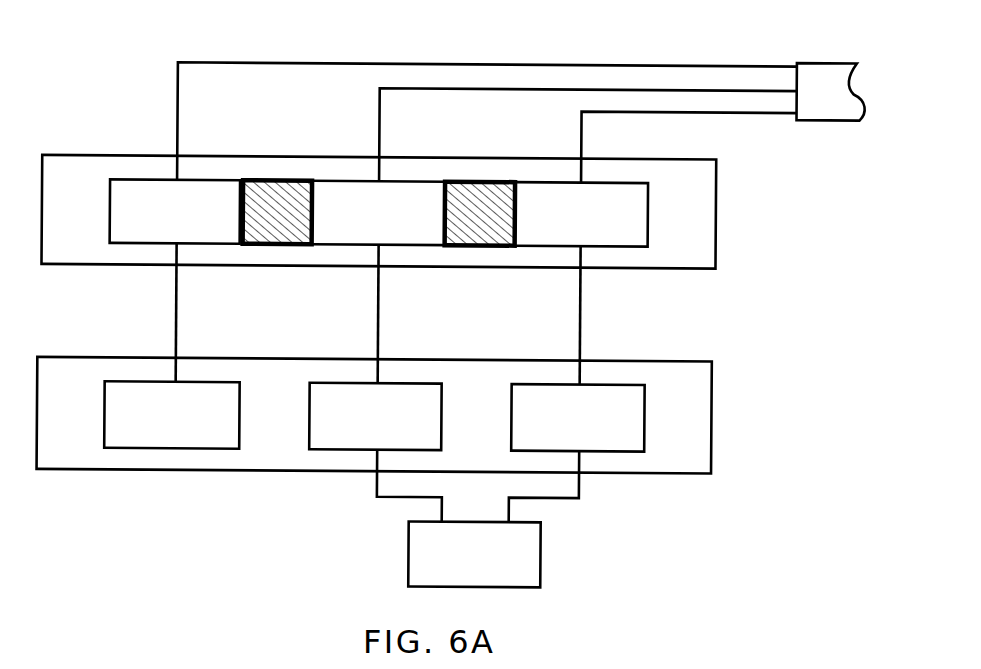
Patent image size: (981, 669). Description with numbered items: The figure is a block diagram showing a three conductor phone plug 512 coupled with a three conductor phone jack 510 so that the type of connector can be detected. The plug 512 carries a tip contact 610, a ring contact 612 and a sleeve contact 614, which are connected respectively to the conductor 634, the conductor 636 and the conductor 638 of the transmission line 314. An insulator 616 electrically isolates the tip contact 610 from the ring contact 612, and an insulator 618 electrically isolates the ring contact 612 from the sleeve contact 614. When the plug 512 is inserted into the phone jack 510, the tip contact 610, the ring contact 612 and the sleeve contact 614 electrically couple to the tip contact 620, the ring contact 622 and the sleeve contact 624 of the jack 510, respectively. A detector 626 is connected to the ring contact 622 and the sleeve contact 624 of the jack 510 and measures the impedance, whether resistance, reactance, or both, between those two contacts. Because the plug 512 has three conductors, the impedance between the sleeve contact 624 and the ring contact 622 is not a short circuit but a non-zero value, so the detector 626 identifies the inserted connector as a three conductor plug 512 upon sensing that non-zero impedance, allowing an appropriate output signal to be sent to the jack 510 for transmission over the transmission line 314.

The three conductor phone plug 512 is at (78, 158).
The three conductor phone jack 510 is at (62, 361).
The tip contact 610 is at (209, 182).
The insulator 616 is at (293, 182).
The ring contact 612 is at (413, 182).
The insulator 618 is at (497, 182).
The sleeve contact 614 is at (617, 182).
The conductor 634 is at (644, 64).
The conductor 636 is at (730, 89).
The conductor 638 is at (705, 112).
The transmission line 314 is at (838, 60).
The tip contact 620 is at (105, 434).
The ring contact 622 is at (310, 433).
The sleeve contact 624 is at (612, 451).
The detector 626 is at (542, 537).